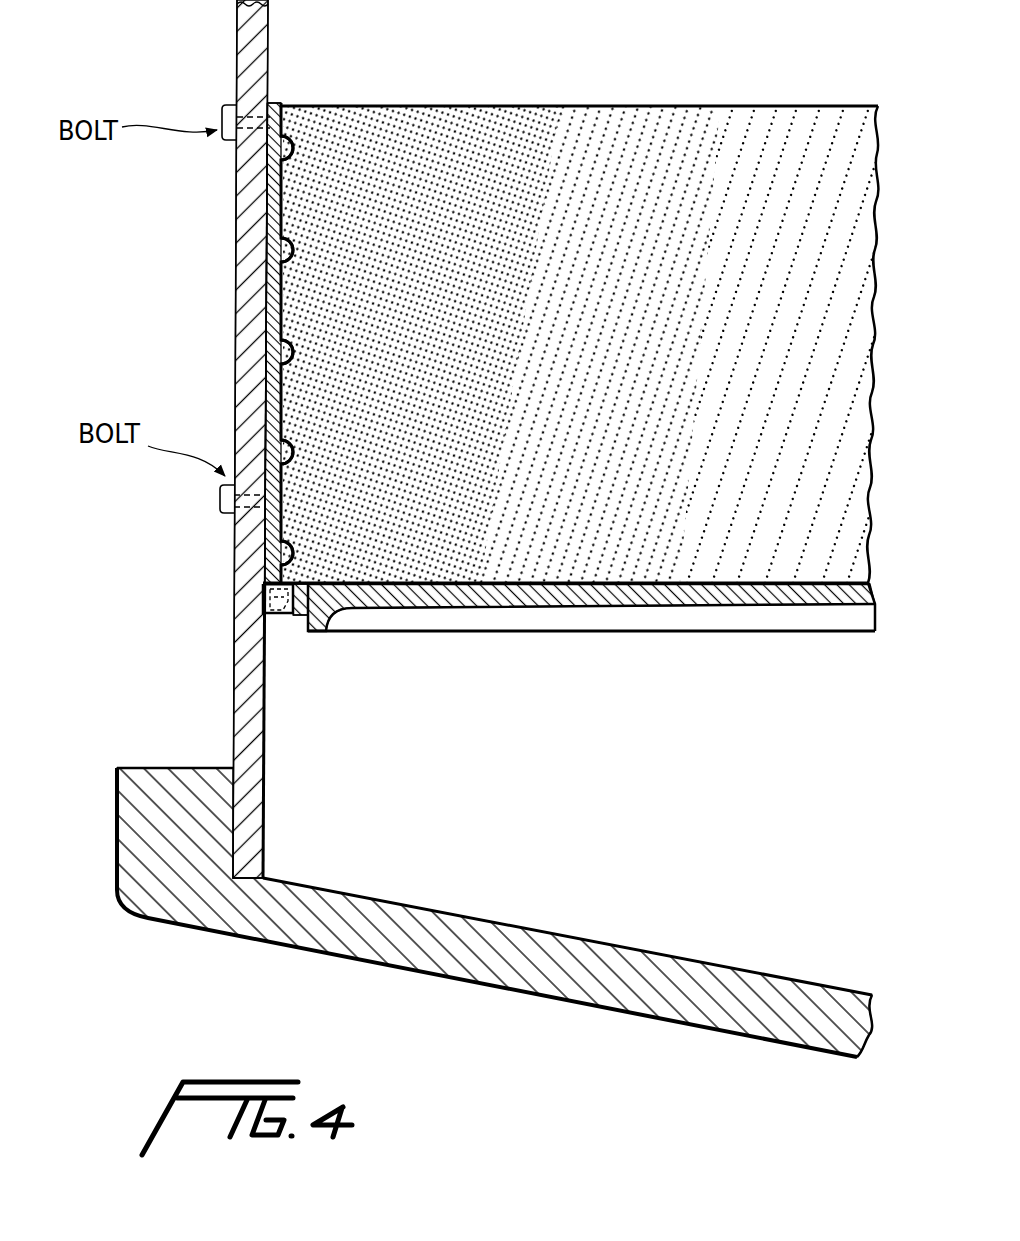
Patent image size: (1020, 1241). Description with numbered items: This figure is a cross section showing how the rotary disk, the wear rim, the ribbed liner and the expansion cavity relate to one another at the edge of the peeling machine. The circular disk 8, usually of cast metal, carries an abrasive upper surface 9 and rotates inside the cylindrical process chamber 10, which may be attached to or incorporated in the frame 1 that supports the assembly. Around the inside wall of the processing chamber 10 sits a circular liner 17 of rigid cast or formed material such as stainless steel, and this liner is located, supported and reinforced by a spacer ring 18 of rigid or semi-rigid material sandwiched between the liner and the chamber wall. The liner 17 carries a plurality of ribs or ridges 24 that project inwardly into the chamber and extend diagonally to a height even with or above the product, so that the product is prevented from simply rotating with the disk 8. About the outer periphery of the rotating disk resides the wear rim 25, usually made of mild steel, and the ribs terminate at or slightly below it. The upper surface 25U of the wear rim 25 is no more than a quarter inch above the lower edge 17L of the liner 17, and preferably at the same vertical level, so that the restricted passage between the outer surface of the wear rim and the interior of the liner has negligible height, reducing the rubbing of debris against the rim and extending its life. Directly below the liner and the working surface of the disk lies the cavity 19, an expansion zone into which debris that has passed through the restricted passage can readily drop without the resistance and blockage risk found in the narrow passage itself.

The frame 1 is at (108, 855).
The circular disk 8 is at (523, 579).
The abrasive upper surface 9 is at (410, 579).
The cylindrical process chamber 10 is at (228, 547).
The circular liner 17 is at (277, 103).
The lower edge of liner 17L is at (262, 596).
The spacer ring 18 is at (259, 307).
The cavity 19 is at (259, 613).
The ribs or ridges 24 is at (299, 248).
The wear rim 25 is at (293, 618).
The upper surface of wear rim 25U is at (277, 569).